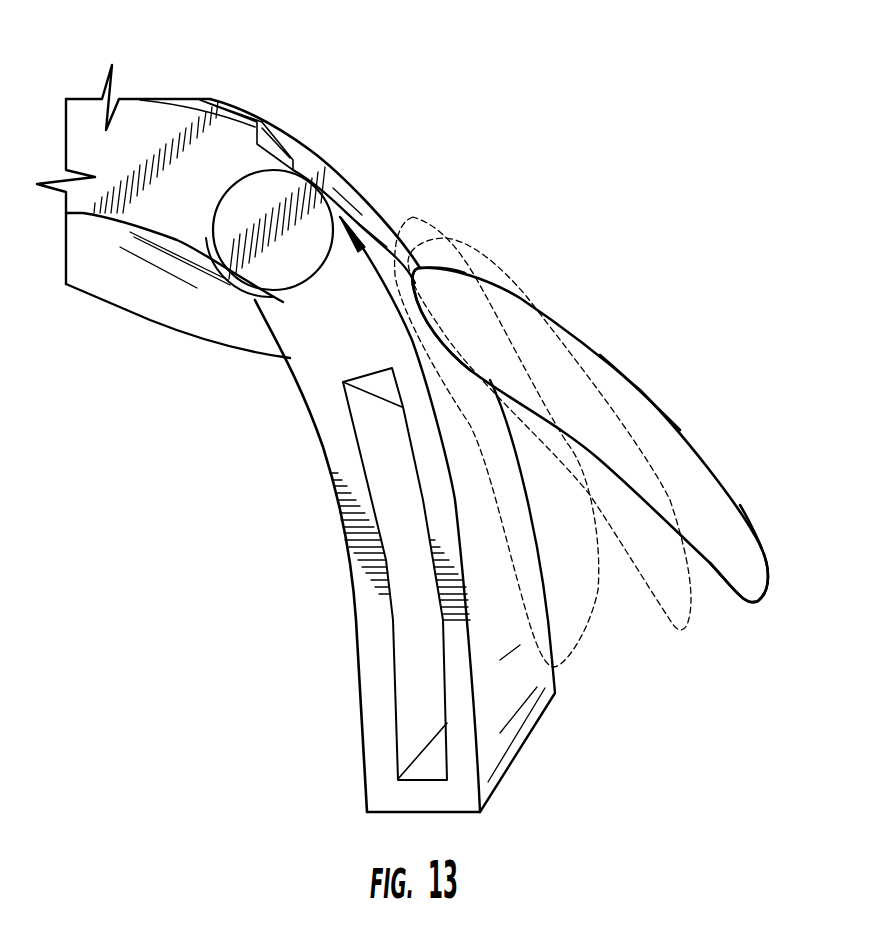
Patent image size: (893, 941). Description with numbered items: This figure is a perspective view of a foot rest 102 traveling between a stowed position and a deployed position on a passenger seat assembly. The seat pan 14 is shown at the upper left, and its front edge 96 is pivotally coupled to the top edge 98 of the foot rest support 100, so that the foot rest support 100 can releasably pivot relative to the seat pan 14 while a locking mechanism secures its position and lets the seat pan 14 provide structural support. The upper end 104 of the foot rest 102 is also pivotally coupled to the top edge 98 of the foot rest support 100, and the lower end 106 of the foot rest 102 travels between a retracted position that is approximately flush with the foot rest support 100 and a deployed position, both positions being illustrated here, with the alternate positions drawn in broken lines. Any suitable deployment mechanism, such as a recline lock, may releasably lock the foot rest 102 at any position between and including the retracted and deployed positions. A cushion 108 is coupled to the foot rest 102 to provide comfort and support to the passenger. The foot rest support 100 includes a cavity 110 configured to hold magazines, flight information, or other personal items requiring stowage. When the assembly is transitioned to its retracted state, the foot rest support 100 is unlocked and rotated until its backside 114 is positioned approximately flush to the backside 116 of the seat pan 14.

The seat pan 14 is at (140, 108).
The front edge 96 is at (213, 252).
The top edge 98 is at (292, 333).
The foot rest support 100 is at (335, 473).
The foot rest 102 is at (620, 387).
The upper end 104 is at (450, 290).
The lower end 106 is at (762, 583).
The cushion 108 is at (700, 455).
The cavity 110 is at (428, 714).
The backside 114 is at (357, 632).
The backside 116 is at (210, 337).